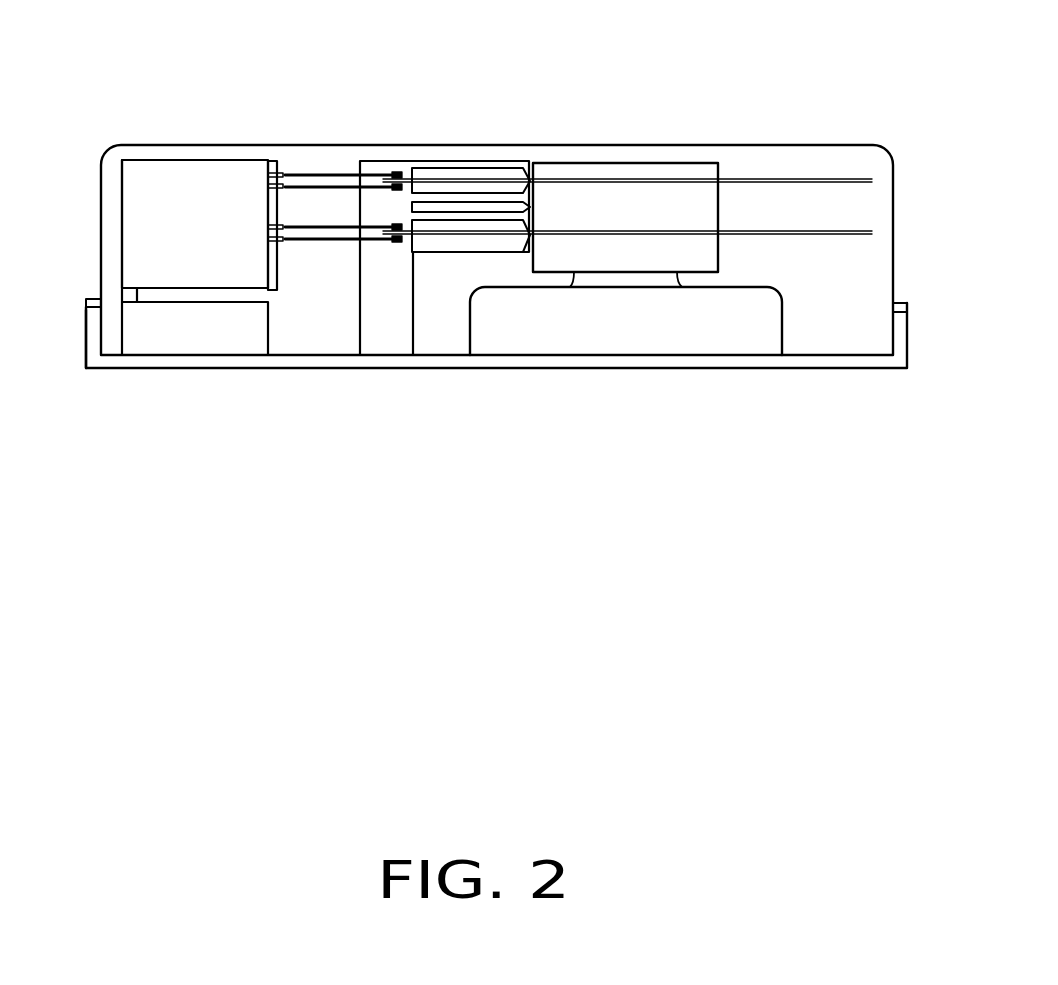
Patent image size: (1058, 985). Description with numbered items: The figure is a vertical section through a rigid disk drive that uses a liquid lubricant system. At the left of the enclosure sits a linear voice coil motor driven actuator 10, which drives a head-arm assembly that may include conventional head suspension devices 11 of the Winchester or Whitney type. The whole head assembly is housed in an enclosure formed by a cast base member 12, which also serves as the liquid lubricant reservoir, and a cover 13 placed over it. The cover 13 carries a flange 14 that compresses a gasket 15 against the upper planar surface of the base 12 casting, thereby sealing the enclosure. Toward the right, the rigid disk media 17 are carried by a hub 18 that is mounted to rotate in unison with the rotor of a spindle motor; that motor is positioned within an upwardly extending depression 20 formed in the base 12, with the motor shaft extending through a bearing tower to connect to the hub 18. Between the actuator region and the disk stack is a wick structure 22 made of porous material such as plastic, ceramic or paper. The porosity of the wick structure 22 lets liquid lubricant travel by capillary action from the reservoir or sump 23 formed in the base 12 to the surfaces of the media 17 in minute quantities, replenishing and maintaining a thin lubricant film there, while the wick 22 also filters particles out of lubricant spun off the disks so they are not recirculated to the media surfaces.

The actuator 10 is at (183, 160).
The head suspension devices 11 is at (305, 174).
The cast base member 12 is at (818, 372).
The cover 13 is at (735, 145).
The flange 14 is at (99, 298).
The gasket 15 is at (86, 307).
The rigid disk media 17 is at (791, 178).
The hub 18 is at (626, 163).
The upwardly extending depression 20 is at (470, 327).
The wick structure 22 is at (388, 161).
The reservoir or sump 23 is at (186, 357).